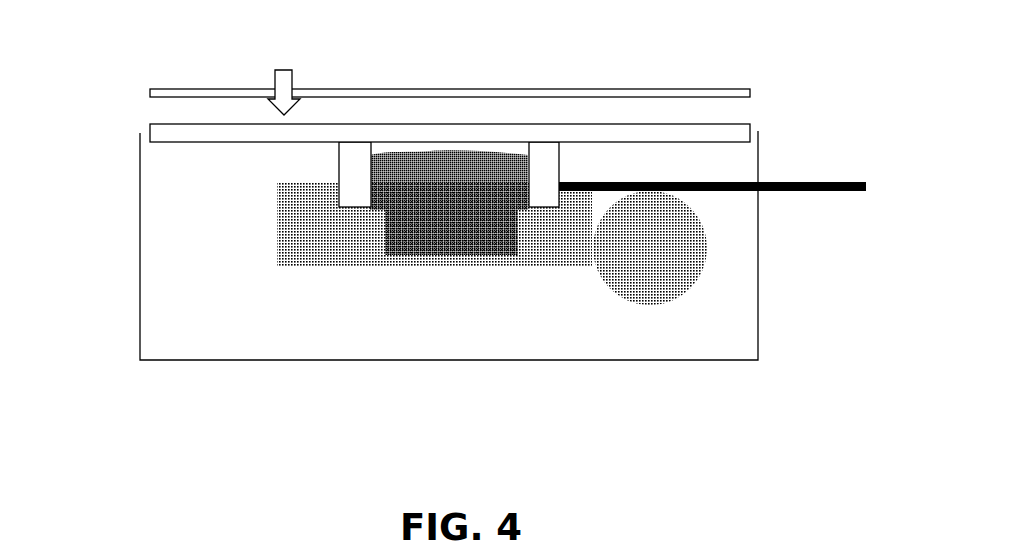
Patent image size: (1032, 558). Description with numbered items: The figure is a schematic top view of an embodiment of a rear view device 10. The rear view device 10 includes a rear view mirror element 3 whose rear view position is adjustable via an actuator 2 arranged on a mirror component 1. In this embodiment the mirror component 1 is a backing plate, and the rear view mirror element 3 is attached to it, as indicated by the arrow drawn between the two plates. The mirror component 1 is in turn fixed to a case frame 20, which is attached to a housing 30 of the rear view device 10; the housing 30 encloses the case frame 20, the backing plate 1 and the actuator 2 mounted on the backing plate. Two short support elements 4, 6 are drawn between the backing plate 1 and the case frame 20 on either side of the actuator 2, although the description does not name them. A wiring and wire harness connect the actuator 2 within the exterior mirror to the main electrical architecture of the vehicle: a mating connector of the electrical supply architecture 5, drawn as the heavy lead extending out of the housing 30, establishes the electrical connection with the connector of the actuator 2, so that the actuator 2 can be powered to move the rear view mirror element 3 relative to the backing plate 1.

The mirror component 1 is at (182, 147).
The actuator 2 is at (455, 257).
The rear view mirror element 3 is at (160, 78).
The spacer 4 is at (544, 156).
The electrical supply architecture 5 is at (812, 198).
The spacer 6 is at (354, 210).
The rear view device 10 is at (812, 128).
The case frame 20 is at (296, 227).
The housing 30 is at (762, 344).